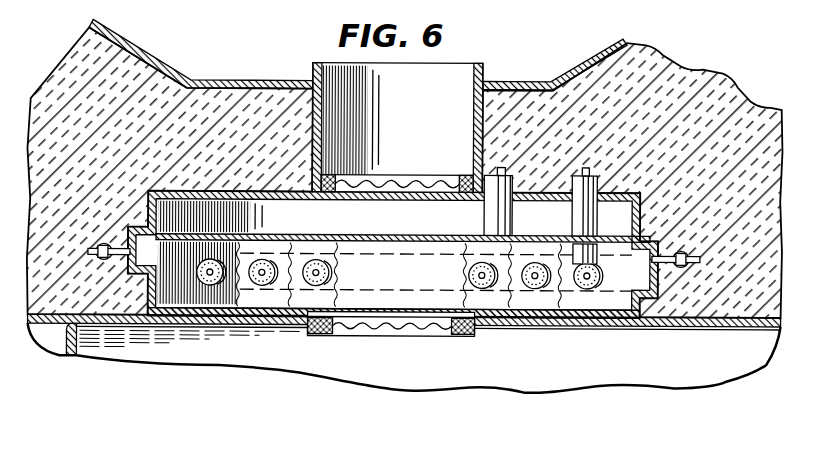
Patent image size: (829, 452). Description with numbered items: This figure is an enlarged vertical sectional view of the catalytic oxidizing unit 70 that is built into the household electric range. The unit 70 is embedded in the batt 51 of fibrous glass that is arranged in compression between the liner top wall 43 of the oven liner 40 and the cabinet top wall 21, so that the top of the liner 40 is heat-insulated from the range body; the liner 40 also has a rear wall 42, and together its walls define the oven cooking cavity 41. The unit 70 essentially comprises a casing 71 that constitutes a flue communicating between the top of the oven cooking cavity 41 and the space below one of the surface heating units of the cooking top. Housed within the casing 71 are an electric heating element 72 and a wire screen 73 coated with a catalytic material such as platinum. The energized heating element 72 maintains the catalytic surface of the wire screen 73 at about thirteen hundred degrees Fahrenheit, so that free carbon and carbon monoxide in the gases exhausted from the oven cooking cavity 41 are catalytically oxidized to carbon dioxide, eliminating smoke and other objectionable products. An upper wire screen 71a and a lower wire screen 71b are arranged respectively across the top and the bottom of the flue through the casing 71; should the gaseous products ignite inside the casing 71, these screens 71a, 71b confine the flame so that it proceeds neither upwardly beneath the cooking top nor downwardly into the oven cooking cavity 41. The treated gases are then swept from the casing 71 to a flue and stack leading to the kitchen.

The top wall 21 is at (215, 81).
The liner 40 is at (106, 349).
The oven cooking cavity 41 is at (443, 376).
The rear wall 42 is at (636, 384).
The top wall 43 is at (674, 329).
The batt 51 is at (50, 70).
The catalytic oxidizing unit 70 is at (640, 198).
The casing 71 is at (553, 200).
The upper wire screen 71a is at (390, 180).
The lower wire screen 71b is at (378, 337).
The electric heating element 72 is at (596, 289).
The wire screen 73 is at (565, 322).